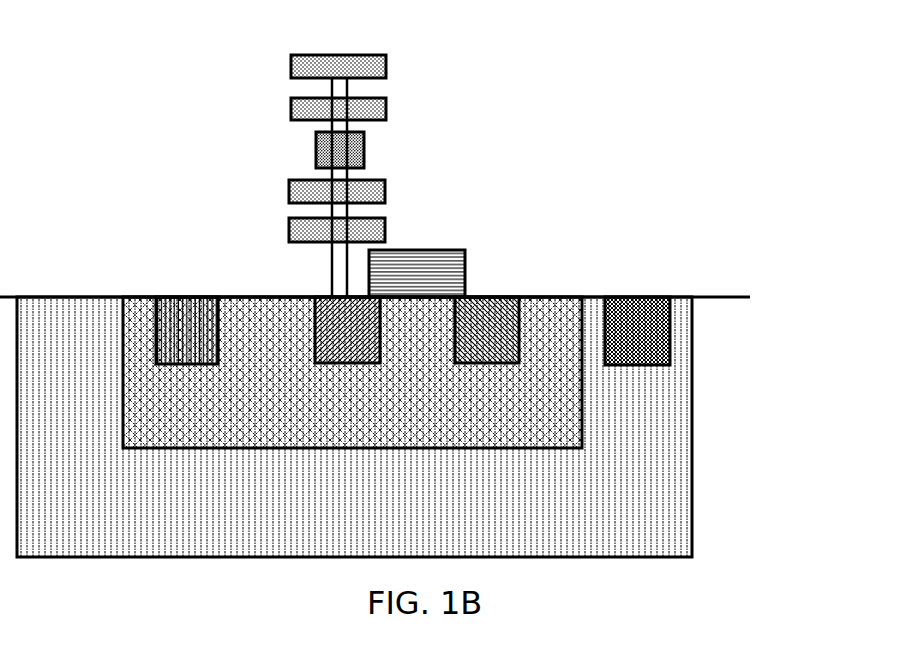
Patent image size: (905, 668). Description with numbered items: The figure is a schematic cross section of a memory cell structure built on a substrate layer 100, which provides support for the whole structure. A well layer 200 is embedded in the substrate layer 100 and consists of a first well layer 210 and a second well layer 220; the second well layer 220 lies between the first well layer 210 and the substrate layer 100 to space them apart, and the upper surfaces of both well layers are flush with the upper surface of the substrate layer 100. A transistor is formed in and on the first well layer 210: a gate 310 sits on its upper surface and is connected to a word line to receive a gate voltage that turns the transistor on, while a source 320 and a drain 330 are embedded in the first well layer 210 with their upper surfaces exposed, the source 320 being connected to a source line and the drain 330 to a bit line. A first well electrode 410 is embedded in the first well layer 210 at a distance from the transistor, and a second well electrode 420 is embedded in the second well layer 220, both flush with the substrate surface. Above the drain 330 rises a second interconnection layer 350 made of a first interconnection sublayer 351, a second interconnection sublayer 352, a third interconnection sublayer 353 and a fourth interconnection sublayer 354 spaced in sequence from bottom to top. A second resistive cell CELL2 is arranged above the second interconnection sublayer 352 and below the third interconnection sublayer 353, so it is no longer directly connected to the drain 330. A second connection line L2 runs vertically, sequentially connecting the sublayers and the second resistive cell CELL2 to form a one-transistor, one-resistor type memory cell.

The substrate layer 100 is at (731, 328).
The well layer 200 is at (446, 427).
The first well layer 210 is at (560, 410).
The second well layer 220 is at (560, 496).
The gate 310 is at (433, 270).
The source 320 is at (503, 306).
The drain 330 is at (313, 323).
The second interconnection layer 350 is at (299, 160).
The first interconnection sublayer 351 is at (287, 214).
The second interconnection sublayer 352 is at (292, 190).
The third interconnection sublayer 353 is at (292, 108).
The fourth interconnection sublayer 354 is at (292, 65).
The first well electrode 410 is at (171, 297).
The second well electrode 420 is at (637, 297).
The second connection line L2 is at (348, 85).
The second resistive cell CELL2 is at (365, 147).